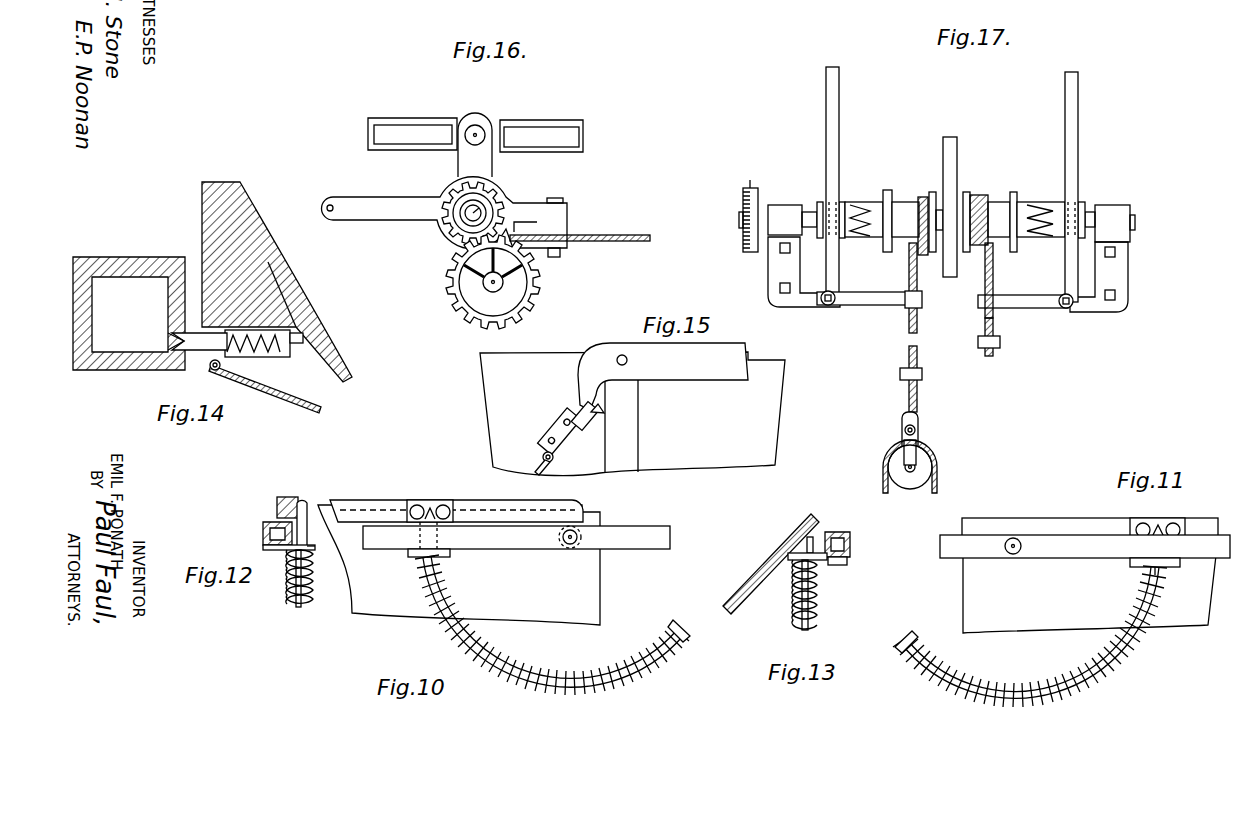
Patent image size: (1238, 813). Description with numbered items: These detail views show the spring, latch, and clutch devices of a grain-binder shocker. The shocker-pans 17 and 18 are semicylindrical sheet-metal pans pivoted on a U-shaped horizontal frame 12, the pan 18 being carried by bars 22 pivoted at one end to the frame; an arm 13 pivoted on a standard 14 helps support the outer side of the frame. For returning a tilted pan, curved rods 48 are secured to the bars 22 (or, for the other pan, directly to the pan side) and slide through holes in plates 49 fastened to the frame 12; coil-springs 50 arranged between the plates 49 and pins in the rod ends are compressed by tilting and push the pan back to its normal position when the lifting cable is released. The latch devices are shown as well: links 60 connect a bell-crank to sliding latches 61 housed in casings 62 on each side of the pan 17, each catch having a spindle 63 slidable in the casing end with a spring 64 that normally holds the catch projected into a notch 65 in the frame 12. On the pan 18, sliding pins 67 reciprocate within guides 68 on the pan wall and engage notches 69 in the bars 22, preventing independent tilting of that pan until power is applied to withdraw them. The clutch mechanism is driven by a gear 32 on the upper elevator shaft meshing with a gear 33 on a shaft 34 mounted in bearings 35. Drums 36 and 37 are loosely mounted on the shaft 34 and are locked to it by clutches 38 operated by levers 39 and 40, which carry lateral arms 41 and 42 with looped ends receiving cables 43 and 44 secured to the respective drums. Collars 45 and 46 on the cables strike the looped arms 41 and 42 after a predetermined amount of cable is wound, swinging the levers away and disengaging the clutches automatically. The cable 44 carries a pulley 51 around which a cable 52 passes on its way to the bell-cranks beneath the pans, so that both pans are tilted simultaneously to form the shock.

In FIG. 14, the U-shaped horizontal frame 12 is at (88, 371).
In FIG. 12, the U-shaped horizontal frame 12 is at (263, 527).
In FIG. 10, the U-shaped horizontal frame 12 is at (638, 533).
In FIG. 13, the U-shaped horizontal frame 12 is at (848, 532).
In FIG. 11, the U-shaped horizontal frame 12 is at (990, 541).
In FIG. 16, the arm 13 is at (533, 130).
In FIG. 16, the standard 14 is at (465, 119).
In FIG. 14, the shocker-pan 17 is at (282, 266).
In FIG. 13, the shocker-pan 17 is at (758, 572).
In FIG. 11, the shocker-pan 17 is at (1090, 585).
In FIG. 15, the shocker-pan 18 is at (771, 368).
In FIG. 10, the shocker-pan 18 is at (585, 588).
In FIG. 15, the bars 22 is at (710, 368).
In FIG. 12, the bars 22 is at (296, 497).
In FIG. 10, the bars 22 is at (478, 509).
In FIG. 16, the gear 32 is at (458, 306).
In FIG. 16, the gear 33 is at (462, 236).
In FIG. 17, the gear 33 is at (752, 188).
In FIG. 16, the shaft 34 is at (480, 212).
In FIG. 17, the shaft 34 is at (742, 220).
In FIG. 17, the bearings 35 is at (785, 205).
In FIG. 17, the drum 36 is at (998, 202).
In FIG. 17, the drum 37 is at (903, 202).
In FIG. 17, the clutches 38 is at (843, 202).
In FIG. 17, the lever 39 is at (1073, 131).
In FIG. 16, the lever 40 is at (393, 205).
In FIG. 17, the lever 40 is at (832, 136).
In FIG. 17, the arm 41 is at (1033, 308).
In FIG. 17, the arm 42 is at (880, 304).
In FIG. 17, the cable 43 is at (995, 278).
In FIG. 16, the cable 44 is at (612, 239).
In FIG. 17, the cable 44 is at (920, 275).
In FIG. 17, the collar 45 is at (1000, 344).
In FIG. 17, the collar 46 is at (922, 374).
In FIG. 12, the curved rods 48 is at (298, 608).
In FIG. 10, the curved rods 48 is at (536, 690).
In FIG. 13, the curved rods 48 is at (812, 630).
In FIG. 11, the curved rods 48 is at (985, 678).
In FIG. 12, the plates 49 is at (315, 551).
In FIG. 10, the plates 49 is at (450, 553).
In FIG. 13, the plates 49 is at (823, 562).
In FIG. 11, the plates 49 is at (1172, 562).
In FIG. 12, the coil-springs 50 is at (287, 582).
In FIG. 10, the coil-springs 50 is at (600, 684).
In FIG. 13, the coil-springs 50 is at (793, 605).
In FIG. 11, the coil-springs 50 is at (1080, 680).
In FIG. 17, the pulley 51 is at (926, 462).
In FIG. 17, the cable 52 is at (938, 488).
In FIG. 14, the links 60 is at (322, 410).
In FIG. 14, the sliding latches 61 is at (192, 350).
In FIG. 14, the casings 62 is at (282, 358).
In FIG. 14, the spindle 63 is at (303, 338).
In FIG. 14, the spring 64 is at (252, 356).
In FIG. 14, the notch 65 is at (173, 347).
In FIG. 15, the sliding pins 67 is at (543, 456).
In FIG. 15, the guides 68 is at (588, 433).
In FIG. 15, the notches 69 is at (602, 409).